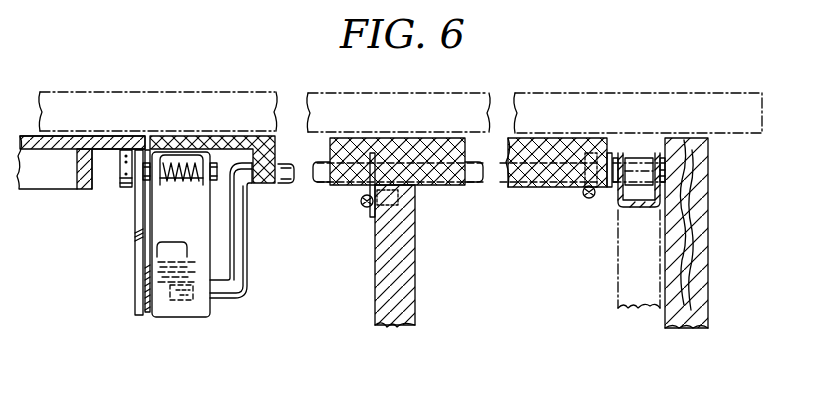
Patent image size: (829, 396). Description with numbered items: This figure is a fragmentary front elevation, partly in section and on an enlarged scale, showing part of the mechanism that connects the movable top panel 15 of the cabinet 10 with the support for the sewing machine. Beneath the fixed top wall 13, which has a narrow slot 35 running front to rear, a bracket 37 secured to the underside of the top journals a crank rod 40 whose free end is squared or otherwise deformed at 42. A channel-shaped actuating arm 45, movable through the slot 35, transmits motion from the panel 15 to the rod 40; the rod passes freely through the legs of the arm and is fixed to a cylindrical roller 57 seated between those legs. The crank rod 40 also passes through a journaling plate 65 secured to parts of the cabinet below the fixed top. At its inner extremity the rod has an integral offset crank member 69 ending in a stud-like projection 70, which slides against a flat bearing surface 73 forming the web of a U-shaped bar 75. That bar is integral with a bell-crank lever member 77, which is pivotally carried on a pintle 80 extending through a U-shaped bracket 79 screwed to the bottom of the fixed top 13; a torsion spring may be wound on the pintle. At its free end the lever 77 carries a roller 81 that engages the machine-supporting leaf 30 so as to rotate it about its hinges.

The cabinet 10 is at (718, 222).
The fixed top wall 13 is at (200, 145).
The movable top panel 15 is at (84, 92).
The leaf 30 is at (24, 136).
The slot 35 is at (616, 150).
The bracket 37 is at (586, 198).
The crank rod 40 is at (480, 186).
The deformed free end of rod 42 is at (662, 176).
The actuating arm 45 is at (628, 210).
The cylindrical roller 57 is at (633, 163).
The journaling plate 65 is at (366, 208).
The offset crank member 69 is at (247, 248).
The stud-like projection 70 is at (188, 302).
The flat bearing surface 73 is at (185, 257).
The U-shaped bar 75 is at (210, 270).
The bell-crank lever member 77 is at (210, 221).
The U-shaped bracket 79 is at (163, 150).
The pintle 80 is at (180, 185).
The roller 81 is at (118, 188).